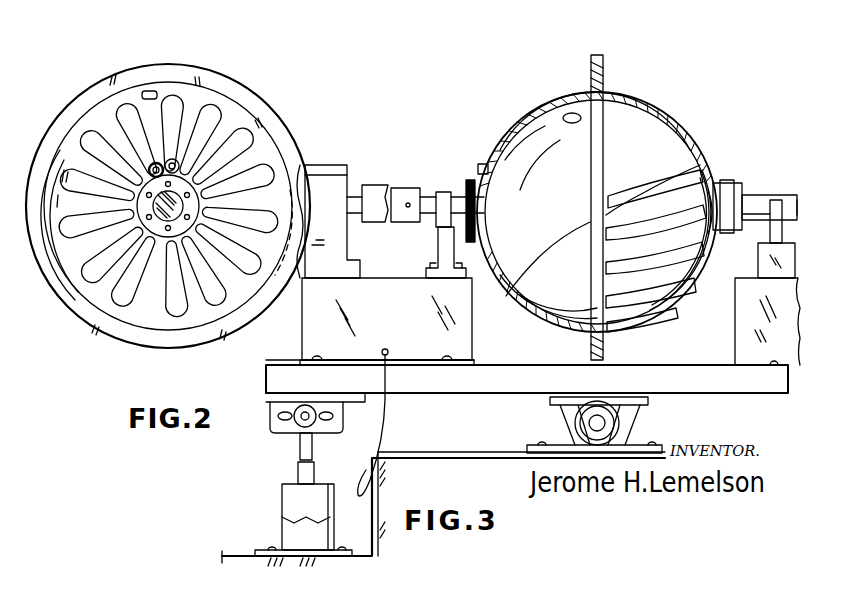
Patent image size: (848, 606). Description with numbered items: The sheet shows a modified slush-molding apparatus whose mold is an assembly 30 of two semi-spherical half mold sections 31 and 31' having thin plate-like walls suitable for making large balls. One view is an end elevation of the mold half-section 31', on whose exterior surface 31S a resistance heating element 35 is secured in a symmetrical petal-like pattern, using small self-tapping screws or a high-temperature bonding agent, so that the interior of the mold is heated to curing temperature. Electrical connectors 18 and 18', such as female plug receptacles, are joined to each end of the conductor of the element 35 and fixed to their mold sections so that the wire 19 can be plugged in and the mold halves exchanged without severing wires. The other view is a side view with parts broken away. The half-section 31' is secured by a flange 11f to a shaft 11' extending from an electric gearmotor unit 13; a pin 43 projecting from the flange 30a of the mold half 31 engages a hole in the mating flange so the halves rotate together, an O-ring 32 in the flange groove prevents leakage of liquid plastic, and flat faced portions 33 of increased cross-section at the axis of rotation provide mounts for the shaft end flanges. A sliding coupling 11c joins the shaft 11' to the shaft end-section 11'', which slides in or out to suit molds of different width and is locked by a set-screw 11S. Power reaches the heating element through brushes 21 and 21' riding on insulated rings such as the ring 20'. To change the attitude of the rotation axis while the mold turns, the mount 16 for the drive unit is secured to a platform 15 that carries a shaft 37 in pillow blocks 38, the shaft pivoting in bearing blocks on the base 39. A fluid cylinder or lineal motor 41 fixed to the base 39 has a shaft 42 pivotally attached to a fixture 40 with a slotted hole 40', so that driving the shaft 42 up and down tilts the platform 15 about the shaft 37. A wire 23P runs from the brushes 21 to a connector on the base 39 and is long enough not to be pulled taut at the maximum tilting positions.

In FIG. 3, the shaft 11' is at (391, 176).
In FIG. 3, the sliding coupling 11c is at (380, 222).
In FIG. 3, the set-screw 11S is at (408, 208).
In FIG. 2, the shaft end-section 11'' is at (135, 273).
In FIG. 3, the shaft end-section 11'' is at (438, 178).
In FIG. 3, the flange 11f is at (468, 226).
In FIG. 3, the electric gearmotor unit 13 is at (340, 176).
In FIG. 3, the frame or platform 15 is at (702, 393).
In FIG. 3, the mount 16 is at (738, 338).
In FIG. 2, the electrical connector 18 is at (158, 95).
In FIG. 3, the electrical connector 18 is at (490, 147).
In FIG. 2, the electrical connector 18' is at (114, 110).
In FIG. 3, the wire 19 is at (470, 190).
In FIG. 3, the ring 20' is at (769, 192).
In FIG. 3, the brush 21 is at (445, 185).
In FIG. 3, the brush 21' is at (762, 239).
In FIG. 3, the wire 23P is at (386, 414).
In FIG. 3, the mold assembly 30 is at (602, 193).
In FIG. 3, the flange 30a is at (638, 42).
In FIG. 3, the semi-spherical half mold section 31 is at (602, 212).
In FIG. 3, the semi-spherical half mold section 31' is at (586, 205).
In FIG. 2, the exterior surface 31S is at (228, 116).
In FIG. 3, the O-ring 32 is at (592, 98).
In FIG. 3, the flat faced portion 33 is at (726, 198).
In FIG. 2, the resistance heating element 35 is at (84, 278).
In FIG. 3, the shaft 37 is at (590, 424).
In FIG. 3, the pillow block 38 is at (622, 436).
In FIG. 3, the base 39 is at (224, 558).
In FIG. 3, the fixture 40 is at (319, 417).
In FIG. 3, the slotted hole 40' is at (280, 427).
In FIG. 3, the fluid cylinder or lineal motor 41 is at (284, 498).
In FIG. 3, the shaft 42 is at (313, 454).
In FIG. 3, the pin 43 is at (604, 80).